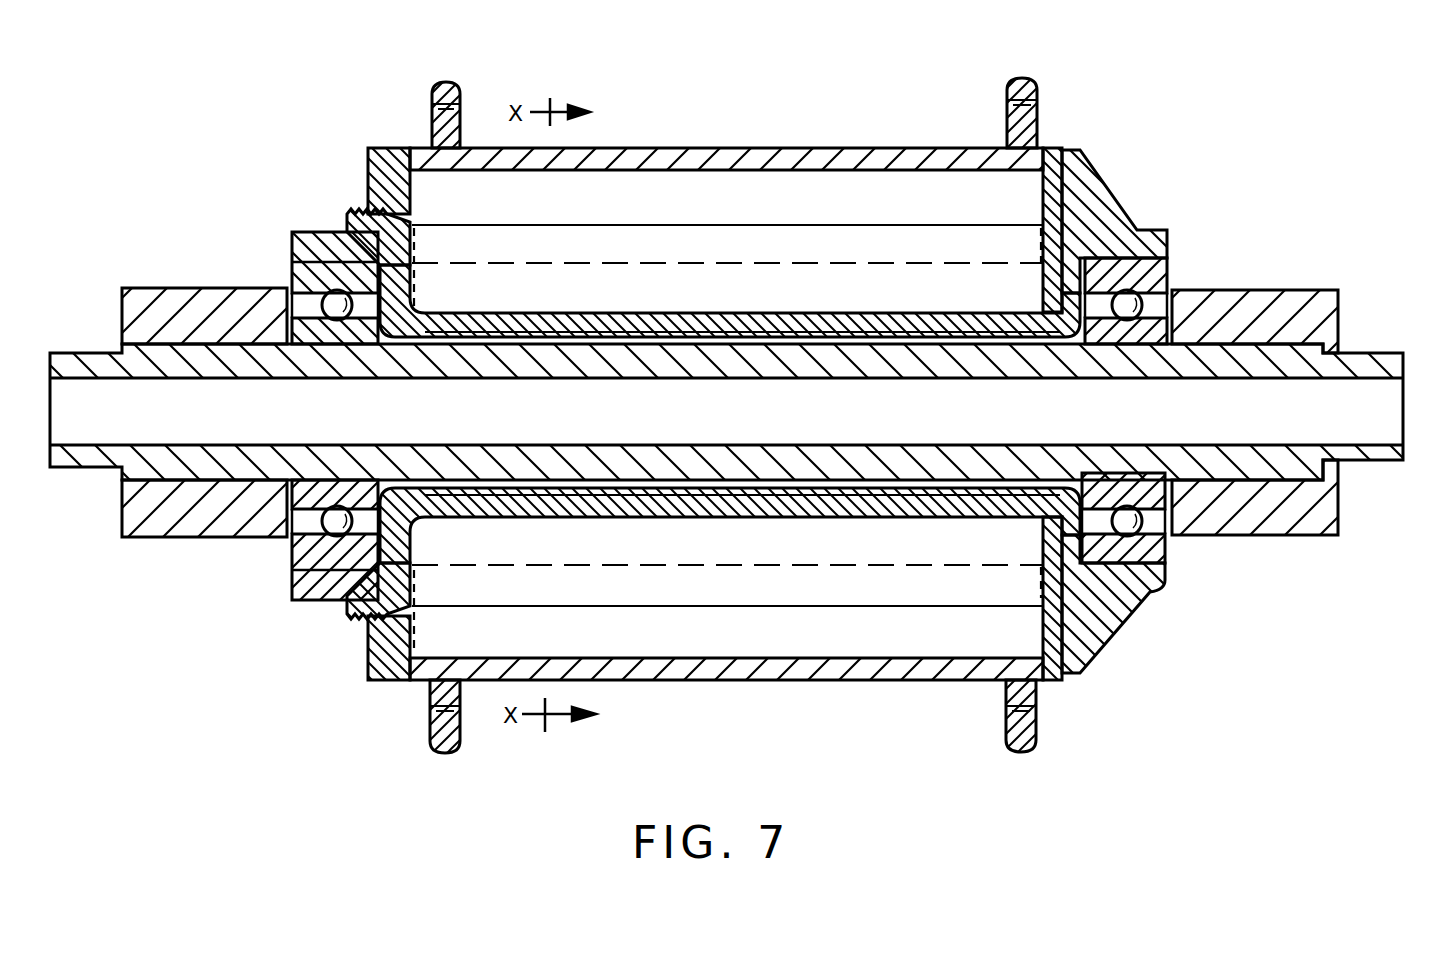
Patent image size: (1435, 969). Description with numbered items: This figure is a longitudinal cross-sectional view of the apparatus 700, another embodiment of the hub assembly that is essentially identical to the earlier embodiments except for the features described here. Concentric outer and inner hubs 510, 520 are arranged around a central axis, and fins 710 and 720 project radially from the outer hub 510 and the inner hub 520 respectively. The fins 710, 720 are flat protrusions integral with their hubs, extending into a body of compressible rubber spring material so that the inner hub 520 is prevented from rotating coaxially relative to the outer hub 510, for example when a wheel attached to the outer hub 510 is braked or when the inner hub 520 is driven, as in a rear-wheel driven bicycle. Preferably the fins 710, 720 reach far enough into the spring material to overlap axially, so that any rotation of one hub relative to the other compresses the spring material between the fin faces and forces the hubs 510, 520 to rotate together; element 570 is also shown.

The apparatus 700 is at (741, 125).
The outer hub 510 is at (866, 146).
The inner hub 520 is at (613, 323).
The shaft 570 is at (718, 368).
The fins 710 is at (742, 638).
The fins 720 is at (890, 610).